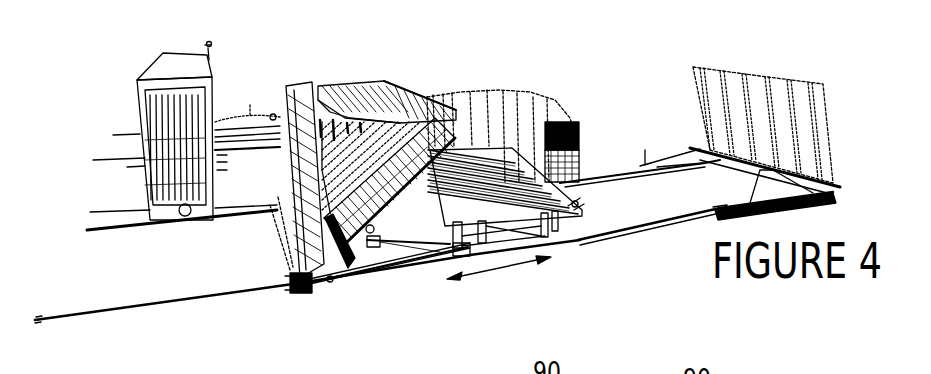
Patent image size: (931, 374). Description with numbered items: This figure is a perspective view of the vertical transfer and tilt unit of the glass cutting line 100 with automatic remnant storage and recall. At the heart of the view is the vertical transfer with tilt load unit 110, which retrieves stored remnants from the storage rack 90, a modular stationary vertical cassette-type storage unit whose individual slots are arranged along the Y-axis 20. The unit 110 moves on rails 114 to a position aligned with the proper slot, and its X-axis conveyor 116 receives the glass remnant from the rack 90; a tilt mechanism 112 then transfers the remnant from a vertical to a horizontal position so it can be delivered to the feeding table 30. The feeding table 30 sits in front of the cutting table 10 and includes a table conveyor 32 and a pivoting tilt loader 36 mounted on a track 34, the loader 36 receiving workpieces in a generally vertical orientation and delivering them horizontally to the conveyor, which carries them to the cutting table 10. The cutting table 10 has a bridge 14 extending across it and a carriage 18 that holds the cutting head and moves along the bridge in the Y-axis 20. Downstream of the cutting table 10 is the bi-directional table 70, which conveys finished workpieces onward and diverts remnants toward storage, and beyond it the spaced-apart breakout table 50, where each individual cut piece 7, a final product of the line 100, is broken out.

The cutting line 100 is at (627, 25).
The cutting table 10 is at (428, 103).
The bridge 14 is at (407, 95).
The carriage 18 is at (362, 95).
The individual cut piece 7 is at (362, 92).
The breakout table 50 is at (322, 88).
The bi-directional table 70 is at (308, 108).
The storage rack 90 is at (150, 176).
The Y-axis 20 is at (500, 279).
The feeding table 30 is at (563, 222).
The table conveyor 32 is at (598, 180).
The track 34 is at (652, 232).
The pivoting tilt loader 36 is at (832, 207).
The vertical transfer with tilt load unit 110 is at (300, 293).
The tilt mechanism 112 is at (393, 262).
The rails 114 is at (142, 310).
The X-axis conveyor 116 is at (360, 268).